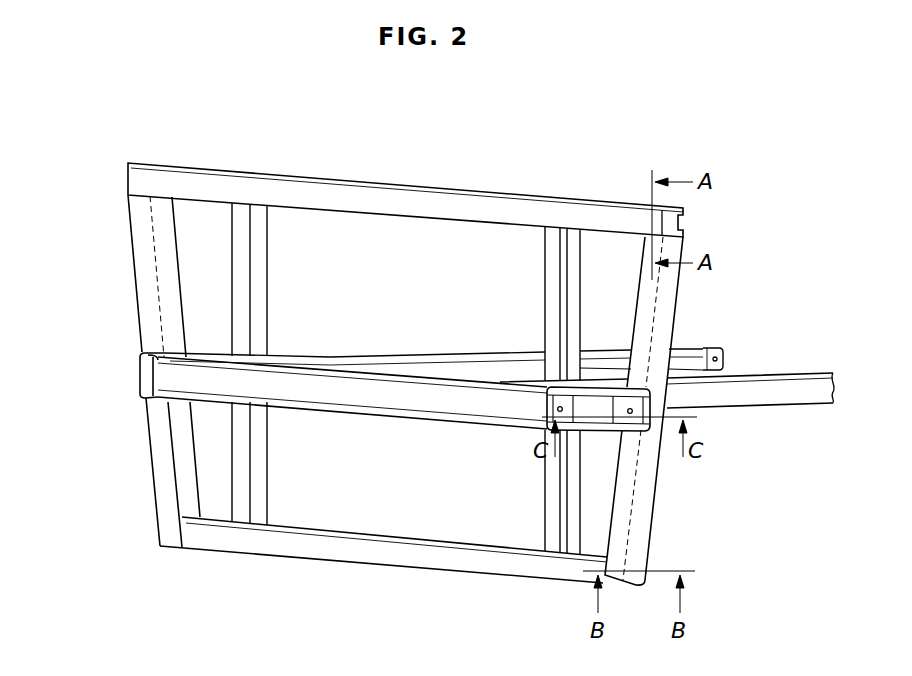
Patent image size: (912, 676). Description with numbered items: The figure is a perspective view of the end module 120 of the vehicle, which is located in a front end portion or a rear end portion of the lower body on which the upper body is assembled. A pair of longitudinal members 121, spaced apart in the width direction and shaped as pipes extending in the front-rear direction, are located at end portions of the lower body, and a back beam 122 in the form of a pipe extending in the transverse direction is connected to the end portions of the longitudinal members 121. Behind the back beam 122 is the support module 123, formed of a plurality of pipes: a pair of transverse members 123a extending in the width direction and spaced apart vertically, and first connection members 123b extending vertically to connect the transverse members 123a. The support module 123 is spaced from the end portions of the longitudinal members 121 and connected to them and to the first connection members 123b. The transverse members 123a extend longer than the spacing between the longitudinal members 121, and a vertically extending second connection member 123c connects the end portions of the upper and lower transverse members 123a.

The end module 120 is at (749, 97).
The longitudinal member 121 is at (743, 393).
The back beam 122 is at (177, 380).
The support module 123 is at (547, 543).
The transverse member 123a is at (433, 207).
The first connection member 123b is at (240, 247).
The second connection member 123c is at (148, 293).